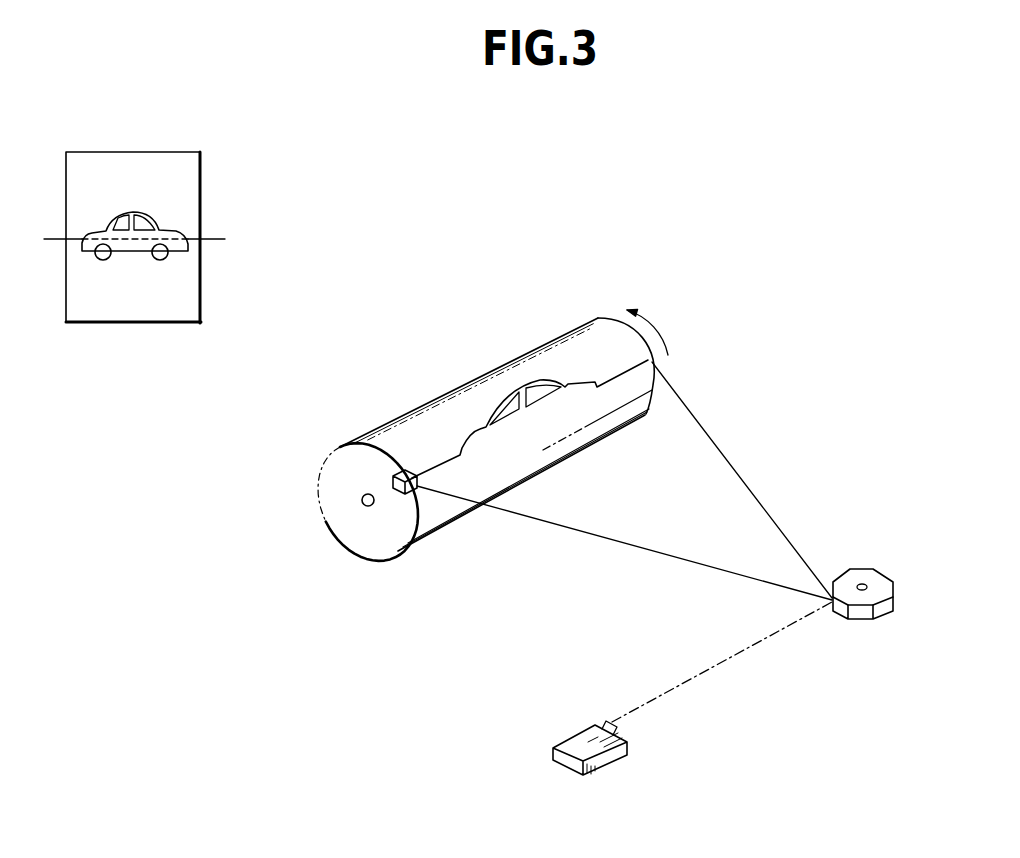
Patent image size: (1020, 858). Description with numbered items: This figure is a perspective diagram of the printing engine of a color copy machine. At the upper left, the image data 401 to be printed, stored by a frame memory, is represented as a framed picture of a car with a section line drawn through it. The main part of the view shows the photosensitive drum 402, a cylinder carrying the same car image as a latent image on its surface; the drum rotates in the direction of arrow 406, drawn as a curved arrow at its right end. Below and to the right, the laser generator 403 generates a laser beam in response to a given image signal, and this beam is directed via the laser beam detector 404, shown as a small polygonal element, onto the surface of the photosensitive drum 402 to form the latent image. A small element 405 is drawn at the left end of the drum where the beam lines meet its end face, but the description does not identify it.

The image data 401 is at (153, 152).
The photosensitive drum 402 is at (526, 350).
The laser generator 403 is at (571, 742).
The laser beam detector 404 is at (873, 570).
The sensor / detector 405 is at (326, 438).
The arrow 406 is at (662, 335).